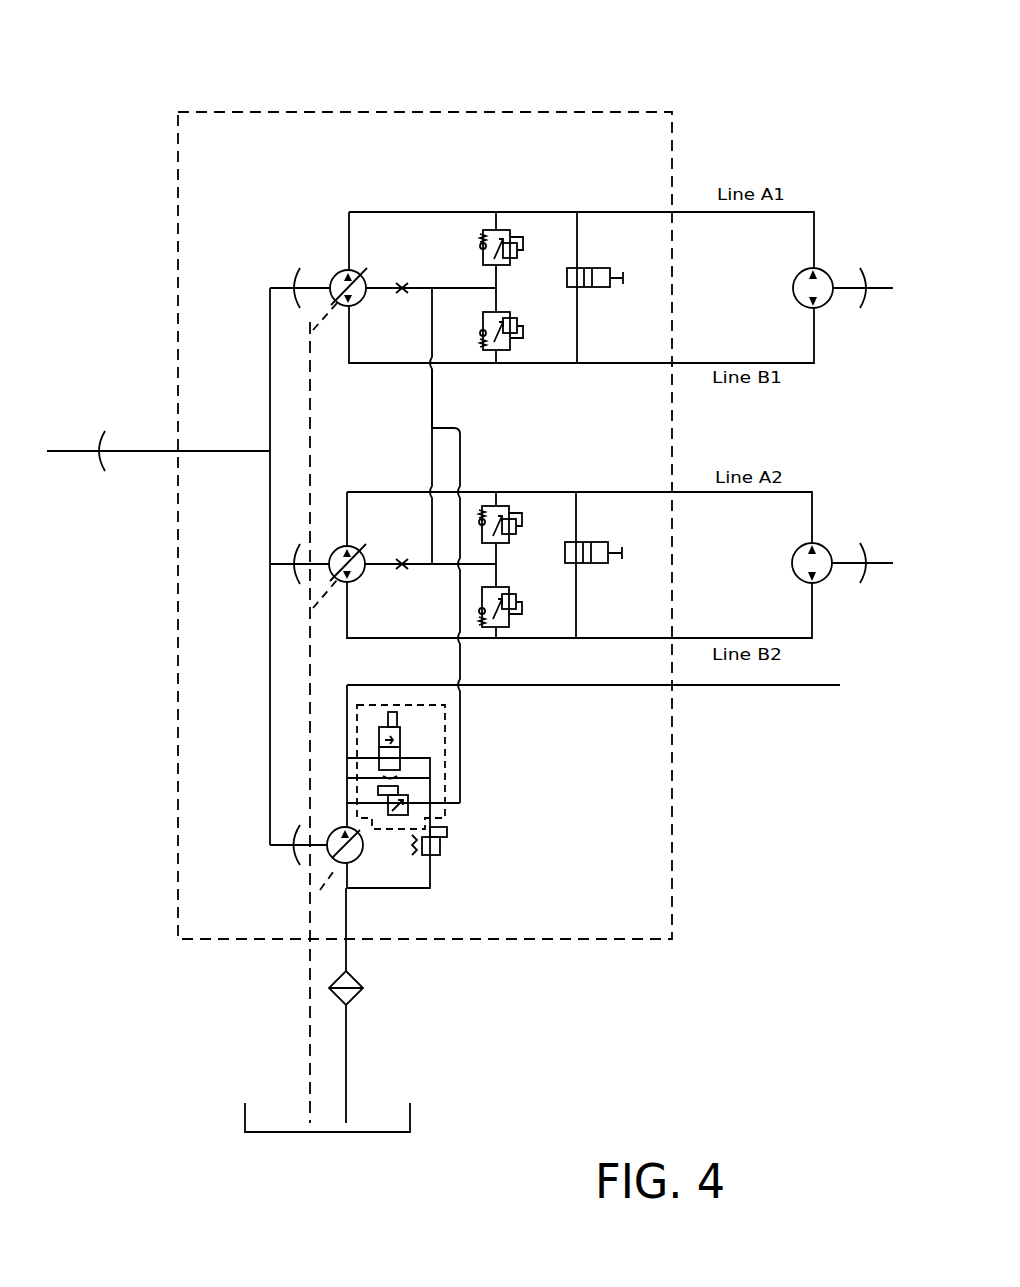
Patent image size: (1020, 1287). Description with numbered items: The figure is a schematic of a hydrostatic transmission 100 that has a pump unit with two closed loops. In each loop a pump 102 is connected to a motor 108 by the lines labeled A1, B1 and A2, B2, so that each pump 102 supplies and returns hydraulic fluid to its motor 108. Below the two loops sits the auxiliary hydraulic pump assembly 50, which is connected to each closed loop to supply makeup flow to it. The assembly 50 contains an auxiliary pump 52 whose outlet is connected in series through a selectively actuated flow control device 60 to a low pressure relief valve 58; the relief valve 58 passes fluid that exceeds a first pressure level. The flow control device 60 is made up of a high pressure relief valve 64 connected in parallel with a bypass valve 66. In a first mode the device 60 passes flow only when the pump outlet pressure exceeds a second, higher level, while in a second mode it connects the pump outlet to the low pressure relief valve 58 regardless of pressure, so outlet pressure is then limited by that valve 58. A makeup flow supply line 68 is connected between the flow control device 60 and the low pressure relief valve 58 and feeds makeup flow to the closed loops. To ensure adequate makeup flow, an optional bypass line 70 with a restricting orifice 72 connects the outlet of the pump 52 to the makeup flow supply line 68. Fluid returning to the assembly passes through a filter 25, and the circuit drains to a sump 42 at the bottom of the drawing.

The hydrostatic transmission 100 is at (415, 98).
The pump 102 is at (346, 275).
The motor 108 is at (815, 284).
The flow control device 60 is at (432, 672).
The makeup flow supply line 68 is at (462, 720).
The bypass valve 66 is at (398, 737).
The restricting orifice 72 is at (398, 786).
The high pressure relief valve 64 is at (409, 804).
The bypass line 70 is at (358, 778).
The auxiliary hydraulic pump assembly 50 is at (480, 860).
The low pressure relief valve 58 is at (438, 858).
The auxiliary pump 52 is at (343, 848).
The filter 25 is at (355, 993).
The sump 42 is at (413, 1117).